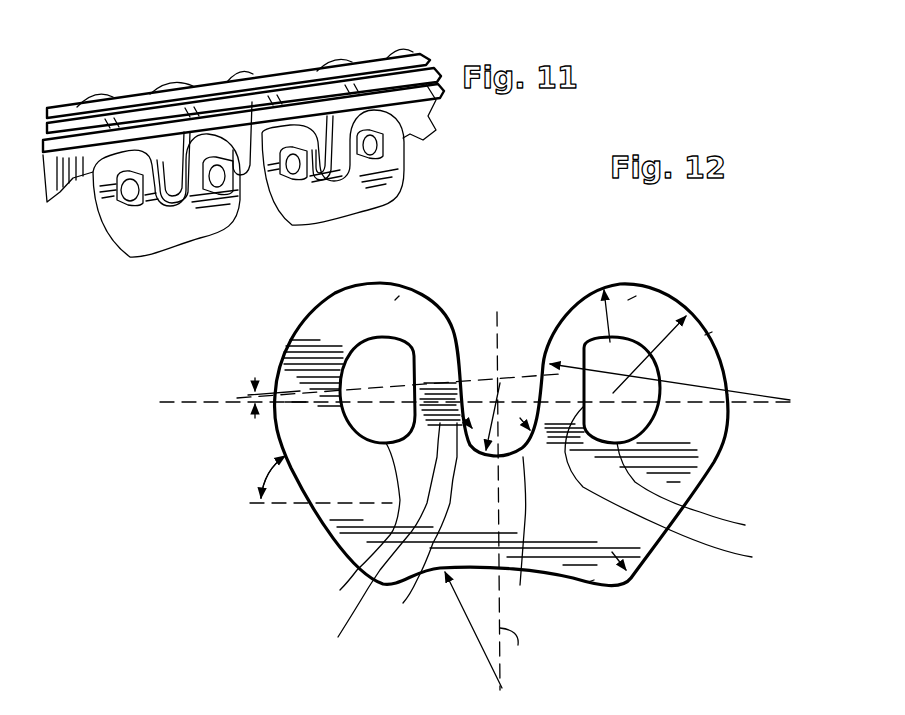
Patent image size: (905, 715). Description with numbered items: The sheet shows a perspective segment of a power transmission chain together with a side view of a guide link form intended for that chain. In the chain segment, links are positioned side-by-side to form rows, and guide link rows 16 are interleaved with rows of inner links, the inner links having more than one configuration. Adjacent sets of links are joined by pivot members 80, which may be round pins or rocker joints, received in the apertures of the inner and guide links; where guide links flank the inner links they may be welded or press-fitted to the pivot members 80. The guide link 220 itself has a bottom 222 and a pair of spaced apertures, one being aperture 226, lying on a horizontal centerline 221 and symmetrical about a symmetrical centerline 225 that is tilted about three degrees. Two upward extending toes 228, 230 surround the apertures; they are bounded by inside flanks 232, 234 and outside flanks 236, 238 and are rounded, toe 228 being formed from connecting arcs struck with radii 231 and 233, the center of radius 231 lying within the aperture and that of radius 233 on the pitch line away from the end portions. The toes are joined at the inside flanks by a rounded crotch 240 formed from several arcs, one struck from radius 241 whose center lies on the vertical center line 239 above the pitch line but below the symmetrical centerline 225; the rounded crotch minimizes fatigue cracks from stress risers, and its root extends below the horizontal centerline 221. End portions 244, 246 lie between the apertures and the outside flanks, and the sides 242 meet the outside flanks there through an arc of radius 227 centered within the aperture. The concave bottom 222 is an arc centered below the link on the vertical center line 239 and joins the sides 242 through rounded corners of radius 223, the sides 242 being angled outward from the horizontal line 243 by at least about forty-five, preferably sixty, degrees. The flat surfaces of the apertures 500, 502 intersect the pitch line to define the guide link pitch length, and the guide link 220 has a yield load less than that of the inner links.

In FIG. 11, the guide link row 16 is at (253, 135).
In FIG. 11, the pivot member 80 is at (130, 190).
In FIG. 11, the guide link 220 is at (358, 201).
In FIG. 12, the guide link 220 is at (447, 278).
In FIG. 12, the horizontal centerline 221 is at (220, 402).
In FIG. 12, the bottom 222 is at (590, 582).
In FIG. 12, the radius 223 is at (625, 556).
In FIG. 12, the symmetrical centerline 225 is at (215, 402).
In FIG. 12, the aperture 226 is at (340, 590).
In FIG. 12, the radius 227 is at (690, 313).
In FIG. 12, the toe 228 is at (632, 300).
In FIG. 12, the toe 230 is at (397, 300).
In FIG. 12, the radius 231 is at (605, 283).
In FIG. 12, the inside flank 232 is at (556, 315).
In FIG. 12, the radius 233 is at (738, 390).
In FIG. 12, the inside flank 234 is at (455, 335).
In FIG. 12, the outside flank 236 is at (708, 336).
In FIG. 12, the outside flank 238 is at (307, 322).
In FIG. 12, the vertical center line 239 is at (528, 642).
In FIG. 12, the crotch 240 is at (520, 585).
In FIG. 12, the radius 241 is at (403, 603).
In FIG. 12, the side 242 is at (328, 532).
In FIG. 12, the horizontal line 243 is at (290, 505).
In FIG. 12, the end portion 244 is at (703, 422).
In FIG. 12, the end portion 246 is at (308, 332).
In FIG. 12, the flat surface of the aperture 500 is at (682, 489).
In FIG. 12, the flat surface of the aperture 502 is at (338, 637).